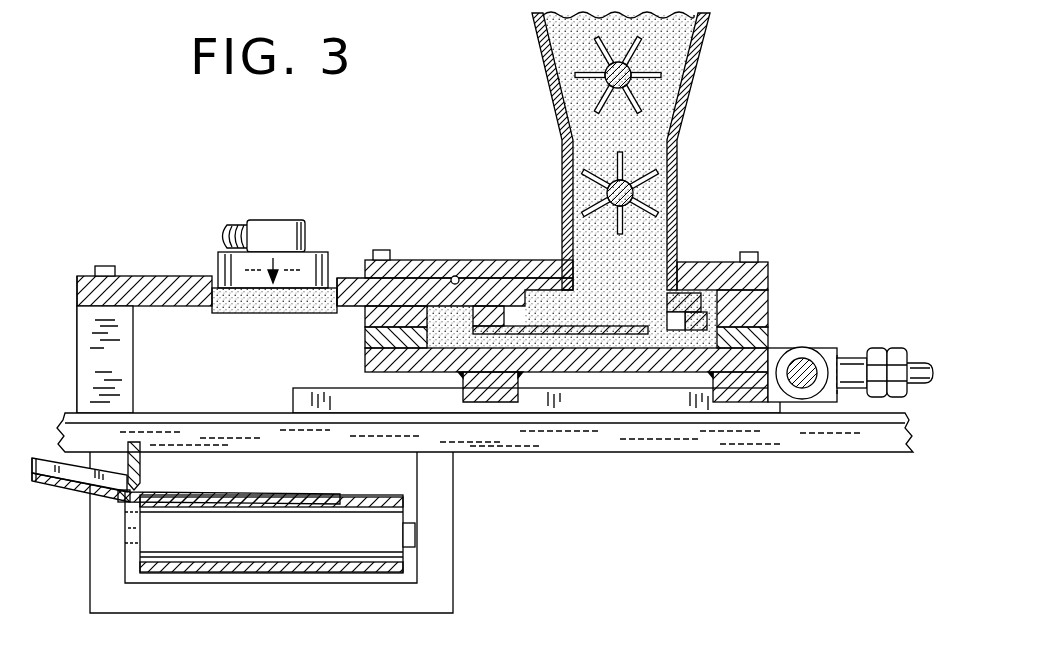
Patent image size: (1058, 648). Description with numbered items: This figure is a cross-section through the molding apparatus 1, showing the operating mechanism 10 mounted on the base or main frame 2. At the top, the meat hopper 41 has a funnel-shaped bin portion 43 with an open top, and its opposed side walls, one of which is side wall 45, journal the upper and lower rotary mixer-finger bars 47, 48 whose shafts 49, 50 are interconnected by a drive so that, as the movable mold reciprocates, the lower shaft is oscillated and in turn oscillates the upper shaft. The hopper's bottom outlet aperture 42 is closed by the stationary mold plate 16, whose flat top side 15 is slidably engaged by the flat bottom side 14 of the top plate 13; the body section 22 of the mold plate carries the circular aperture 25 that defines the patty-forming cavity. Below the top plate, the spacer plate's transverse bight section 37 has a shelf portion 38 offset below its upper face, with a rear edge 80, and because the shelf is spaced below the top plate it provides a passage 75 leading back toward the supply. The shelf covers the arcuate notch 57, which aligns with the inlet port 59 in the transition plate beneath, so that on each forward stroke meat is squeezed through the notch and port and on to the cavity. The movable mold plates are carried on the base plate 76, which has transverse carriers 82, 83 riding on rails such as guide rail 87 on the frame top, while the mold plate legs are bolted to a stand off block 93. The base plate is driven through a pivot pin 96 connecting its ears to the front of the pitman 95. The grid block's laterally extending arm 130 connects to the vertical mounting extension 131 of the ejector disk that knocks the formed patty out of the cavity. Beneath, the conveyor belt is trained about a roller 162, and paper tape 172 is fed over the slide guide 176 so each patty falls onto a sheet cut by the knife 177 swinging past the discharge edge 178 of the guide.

The molding apparatus 1 is at (76, 272).
The base or main frame 2 is at (735, 446).
The operating mechanism 10 is at (690, 211).
The top plate 13 is at (770, 268).
The flat bottom side 14 is at (480, 300).
The flat top side 15 is at (418, 260).
The stationary mold plate 16 is at (178, 276).
The main plate or body section 22 is at (458, 278).
The circular aperture 25 is at (338, 277).
The transverse bight section 37 is at (766, 308).
The shelf portion 38 is at (663, 297).
The meat or product hopper 41 is at (690, 140).
The bottom outlet aperture 42 is at (678, 245).
The funnel-shaped bin portion 43 is at (705, 20).
The side wall 45 is at (543, 28).
The upper mixer-finger bar 47 is at (640, 52).
The lower mixer-finger bar 48 is at (633, 165).
The upper shaft 49 is at (600, 80).
The lower shaft 50 is at (608, 183).
The arcuate notch 57 is at (668, 318).
The inlet port 59 is at (656, 332).
The passage 75 is at (705, 288).
The base plate 76 is at (556, 364).
The rear edge 80 is at (727, 296).
The transverse carrier 82 is at (490, 395).
The transverse carrier 83 is at (750, 390).
The guide rail 87 is at (337, 410).
The stand off block 93 is at (90, 350).
The pitman 95 is at (926, 378).
The pivot pin 96 is at (803, 390).
The laterally extending arm 130 is at (228, 228).
The vertical mounting extension 131 is at (283, 220).
The roller 162 is at (259, 546).
The paper tape 172 is at (58, 455).
The slide guide 176 is at (83, 472).
The knife 177 is at (143, 462).
The discharge edge 178 is at (118, 505).